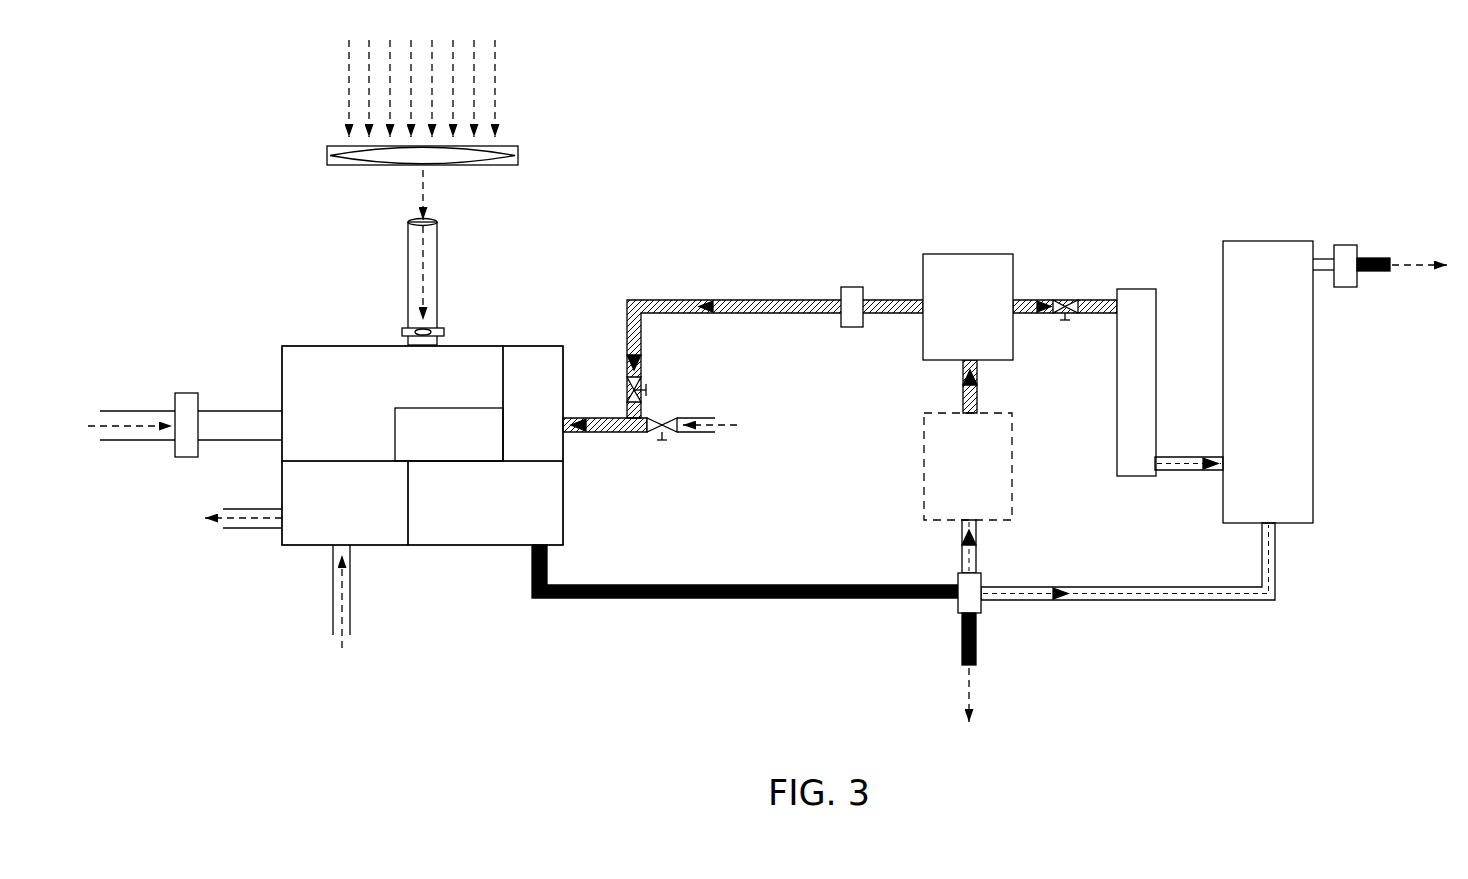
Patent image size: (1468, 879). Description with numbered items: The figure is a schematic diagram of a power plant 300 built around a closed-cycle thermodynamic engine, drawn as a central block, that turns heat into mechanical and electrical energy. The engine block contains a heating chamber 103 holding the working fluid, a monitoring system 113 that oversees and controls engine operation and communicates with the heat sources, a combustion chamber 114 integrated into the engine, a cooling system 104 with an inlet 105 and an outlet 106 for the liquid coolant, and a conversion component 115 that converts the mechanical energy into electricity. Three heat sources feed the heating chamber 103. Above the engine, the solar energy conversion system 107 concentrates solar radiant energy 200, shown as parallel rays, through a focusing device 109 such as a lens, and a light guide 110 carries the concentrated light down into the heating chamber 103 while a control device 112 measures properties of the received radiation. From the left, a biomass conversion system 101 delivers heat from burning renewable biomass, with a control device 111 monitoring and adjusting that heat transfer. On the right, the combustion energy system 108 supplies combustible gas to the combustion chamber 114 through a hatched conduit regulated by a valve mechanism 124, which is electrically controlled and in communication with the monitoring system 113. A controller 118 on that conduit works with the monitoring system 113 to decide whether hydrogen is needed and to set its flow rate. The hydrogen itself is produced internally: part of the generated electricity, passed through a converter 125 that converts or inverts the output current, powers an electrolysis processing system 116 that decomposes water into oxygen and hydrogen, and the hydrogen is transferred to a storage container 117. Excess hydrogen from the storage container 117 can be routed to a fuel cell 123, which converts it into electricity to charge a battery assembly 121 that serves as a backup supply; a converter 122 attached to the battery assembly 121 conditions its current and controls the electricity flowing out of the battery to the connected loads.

The power plant 300 is at (792, 92).
The solar radiant energy 200 is at (500, 78).
The solar energy conversion system 107 is at (325, 189).
The focusing device 109 is at (519, 153).
The light guide 110 is at (438, 258).
The control device 112 is at (444, 332).
The biomass conversion system 101 is at (107, 388).
The control device 111 is at (186, 393).
The heating chamber 103 is at (367, 397).
The cooling system 104 is at (367, 512).
The monitoring system 113 is at (472, 444).
The combustion chamber 114 is at (557, 397).
The conversion component 115 is at (509, 512).
The outlet 106 is at (235, 528).
The inlet 105 is at (352, 597).
The combustion energy system 108 is at (646, 281).
The valve mechanism 124 is at (648, 388).
The controller 118 is at (850, 287).
The storage container 117 is at (965, 254).
The electrolysis processing system 116 is at (924, 467).
The fuel cell 123 is at (1157, 315).
The battery assembly 121 is at (1255, 241).
The converter 122 is at (1345, 245).
The converter 125 is at (958, 580).